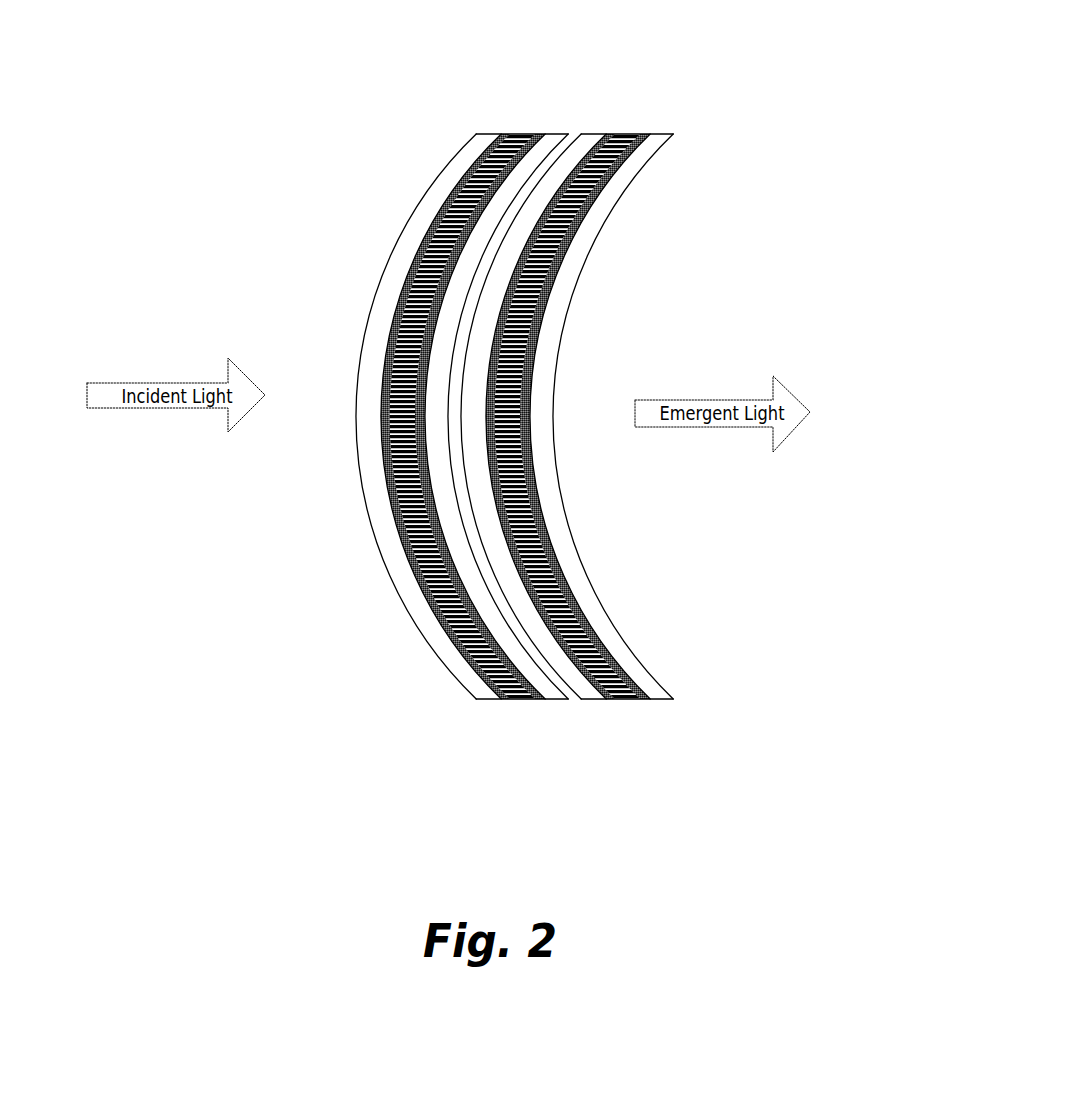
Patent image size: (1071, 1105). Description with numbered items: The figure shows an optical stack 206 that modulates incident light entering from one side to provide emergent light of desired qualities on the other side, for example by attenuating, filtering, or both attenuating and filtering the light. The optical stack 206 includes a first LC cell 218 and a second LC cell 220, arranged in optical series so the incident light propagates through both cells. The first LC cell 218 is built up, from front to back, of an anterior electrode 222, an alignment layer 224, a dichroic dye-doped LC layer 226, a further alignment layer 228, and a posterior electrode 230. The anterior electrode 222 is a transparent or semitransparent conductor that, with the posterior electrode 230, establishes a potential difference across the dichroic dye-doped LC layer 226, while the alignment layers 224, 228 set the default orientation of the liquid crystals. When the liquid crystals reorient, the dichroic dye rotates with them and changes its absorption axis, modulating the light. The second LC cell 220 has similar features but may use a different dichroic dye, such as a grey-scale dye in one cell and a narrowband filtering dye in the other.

The optical stack 206 is at (429, 426).
The first LC cell 218 is at (343, 475).
The second LC cell 220 is at (688, 710).
The anterior electrode 222 is at (427, 194).
The alignment layer 224 is at (408, 268).
The dichroic dye-doped LC layer 226 is at (403, 470).
The alignment layer 228 is at (447, 578).
The posterior electrode 230 is at (573, 710).